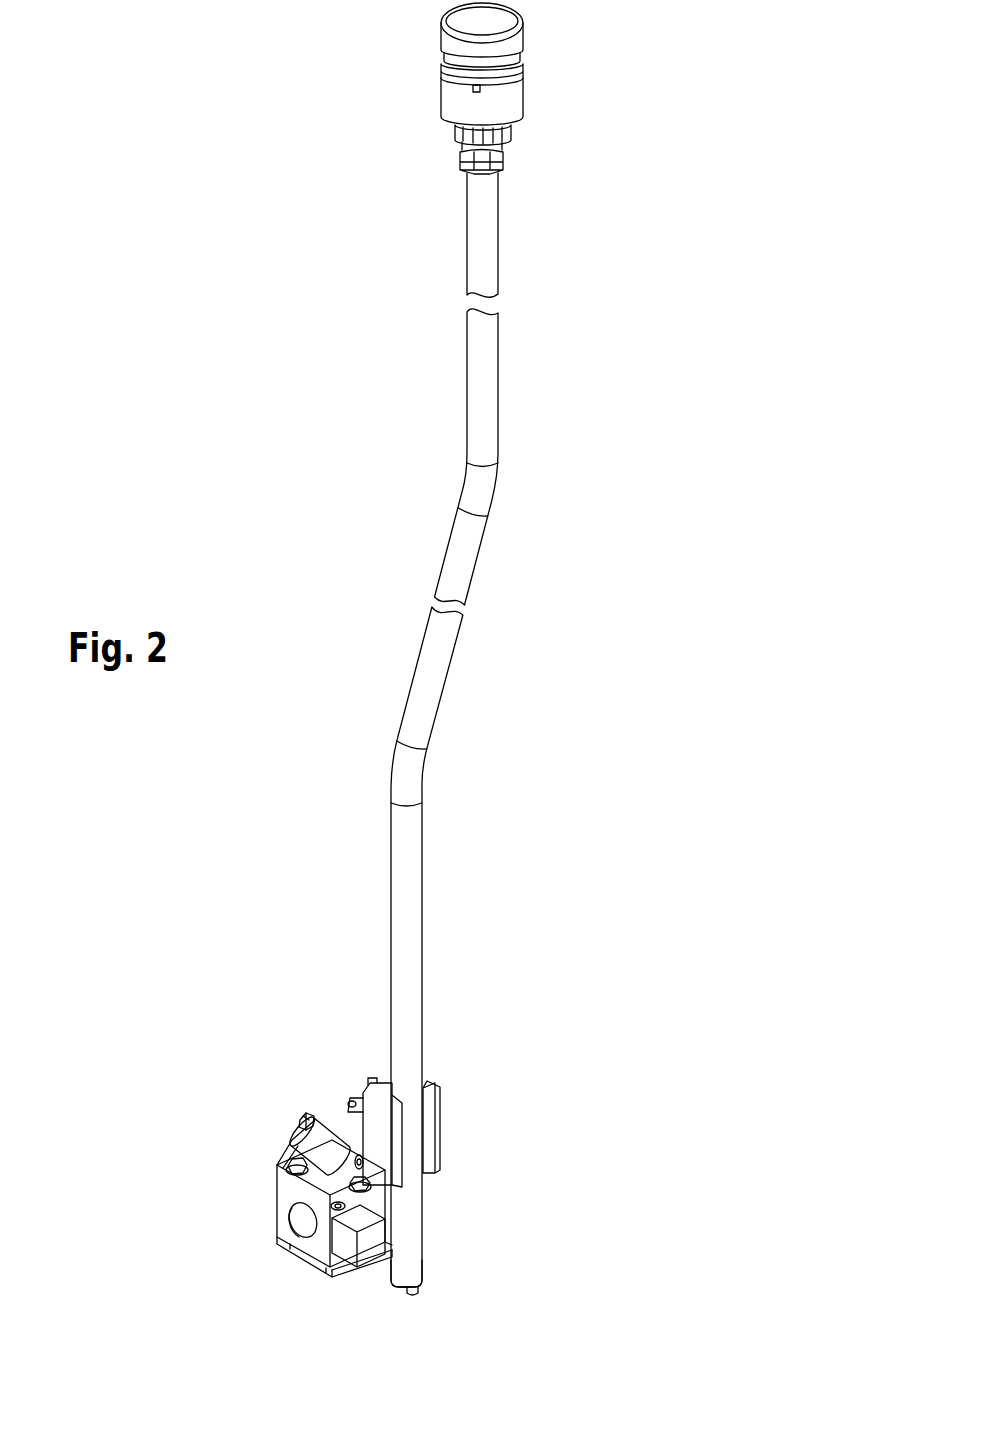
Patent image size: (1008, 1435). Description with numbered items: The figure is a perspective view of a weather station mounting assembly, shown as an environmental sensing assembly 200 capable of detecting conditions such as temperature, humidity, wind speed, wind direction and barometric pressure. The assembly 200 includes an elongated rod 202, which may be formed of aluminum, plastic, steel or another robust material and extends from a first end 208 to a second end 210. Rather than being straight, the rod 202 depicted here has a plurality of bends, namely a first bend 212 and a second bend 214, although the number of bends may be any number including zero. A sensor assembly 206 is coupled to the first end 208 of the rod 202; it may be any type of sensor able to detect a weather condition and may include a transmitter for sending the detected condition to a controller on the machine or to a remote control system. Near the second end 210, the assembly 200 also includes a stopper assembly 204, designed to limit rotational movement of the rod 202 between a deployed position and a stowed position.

The environmental sensing assembly 200 is at (743, 145).
The elongated rod 202 is at (473, 756).
The stopper assembly 204 is at (250, 1173).
The sensor assembly 206 is at (542, 65).
The first end 208 is at (445, 153).
The second end 210 is at (432, 1275).
The first bend 212 is at (430, 776).
The second bend 214 is at (462, 487).